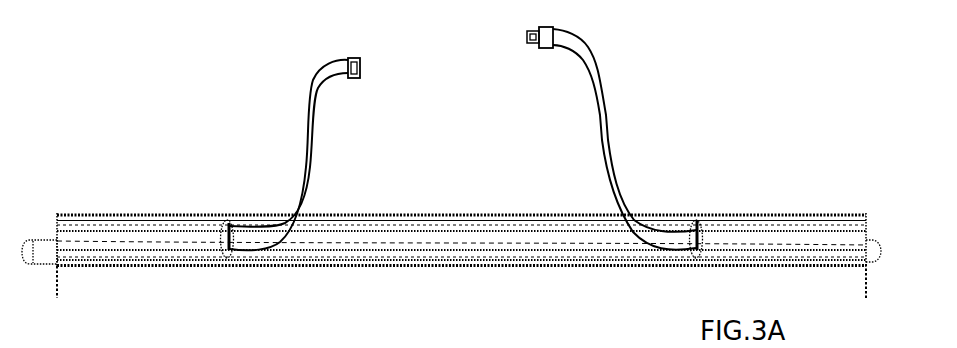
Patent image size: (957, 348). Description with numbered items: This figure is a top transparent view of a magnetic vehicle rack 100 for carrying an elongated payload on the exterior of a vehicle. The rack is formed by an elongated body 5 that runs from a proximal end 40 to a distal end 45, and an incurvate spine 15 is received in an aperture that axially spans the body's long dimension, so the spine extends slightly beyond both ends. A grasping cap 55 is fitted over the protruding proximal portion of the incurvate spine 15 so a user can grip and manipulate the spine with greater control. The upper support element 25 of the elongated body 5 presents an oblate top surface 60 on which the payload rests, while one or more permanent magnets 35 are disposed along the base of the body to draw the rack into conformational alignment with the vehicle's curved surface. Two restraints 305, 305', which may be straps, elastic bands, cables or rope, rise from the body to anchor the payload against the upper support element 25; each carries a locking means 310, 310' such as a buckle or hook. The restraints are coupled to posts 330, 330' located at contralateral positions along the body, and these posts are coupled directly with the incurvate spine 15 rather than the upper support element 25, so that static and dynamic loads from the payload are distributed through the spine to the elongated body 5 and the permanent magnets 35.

The magnetic vehicle rack 100 is at (98, 107).
The elongated body 5 is at (78, 234).
The incurvate spine 15 is at (142, 245).
The upper support element 25 is at (144, 207).
The permanent magnets 35 is at (435, 283).
The proximal end 40 is at (58, 292).
The distal end 45 is at (868, 278).
The grasping cap 55 is at (33, 240).
The oblate top surface 60 is at (472, 237).
The restraint 305 is at (288, 155).
The locking means 310 is at (371, 45).
The post 330 is at (225, 264).
The restraint 305' is at (625, 131).
The locking means 310' is at (511, 58).
The post 330' is at (735, 209).